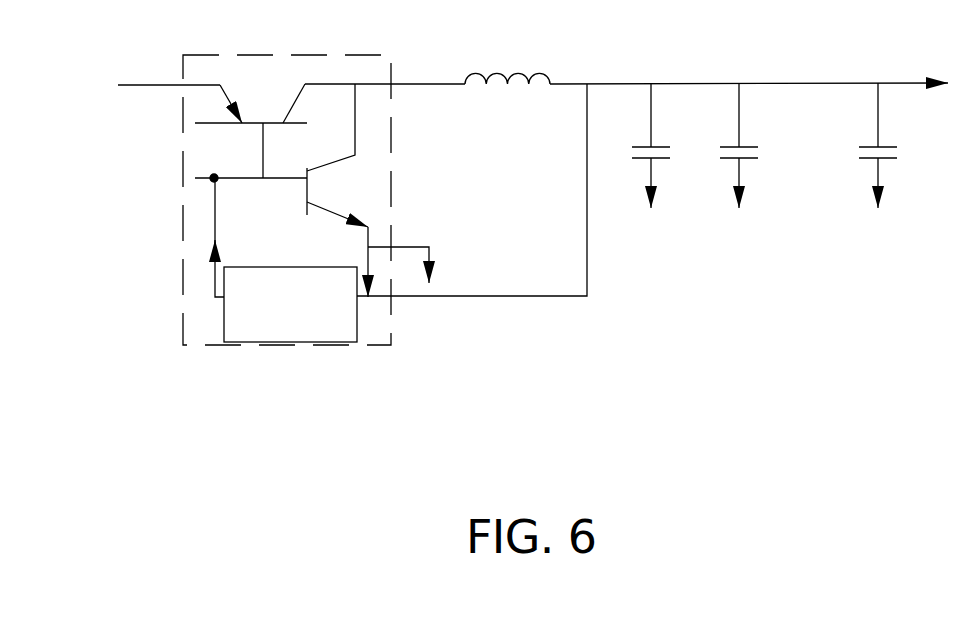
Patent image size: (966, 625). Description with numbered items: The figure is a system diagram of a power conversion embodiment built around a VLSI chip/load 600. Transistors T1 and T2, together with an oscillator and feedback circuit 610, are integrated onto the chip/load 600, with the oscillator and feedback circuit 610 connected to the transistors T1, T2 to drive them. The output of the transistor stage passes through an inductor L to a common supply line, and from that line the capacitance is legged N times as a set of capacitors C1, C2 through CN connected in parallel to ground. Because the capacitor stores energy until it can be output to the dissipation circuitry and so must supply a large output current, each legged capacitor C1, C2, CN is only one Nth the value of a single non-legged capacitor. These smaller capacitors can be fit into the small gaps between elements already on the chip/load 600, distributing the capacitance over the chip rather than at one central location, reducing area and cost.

The VLSI chip/load 600 is at (326, 205).
The oscillator and feedback circuit 610 is at (258, 347).
The transistor T1 is at (251, 131).
The transistor T2 is at (337, 155).
The inductor L is at (507, 94).
The capacitor C1 is at (673, 145).
The capacitor C2 is at (759, 145).
The capacitor CN is at (901, 145).